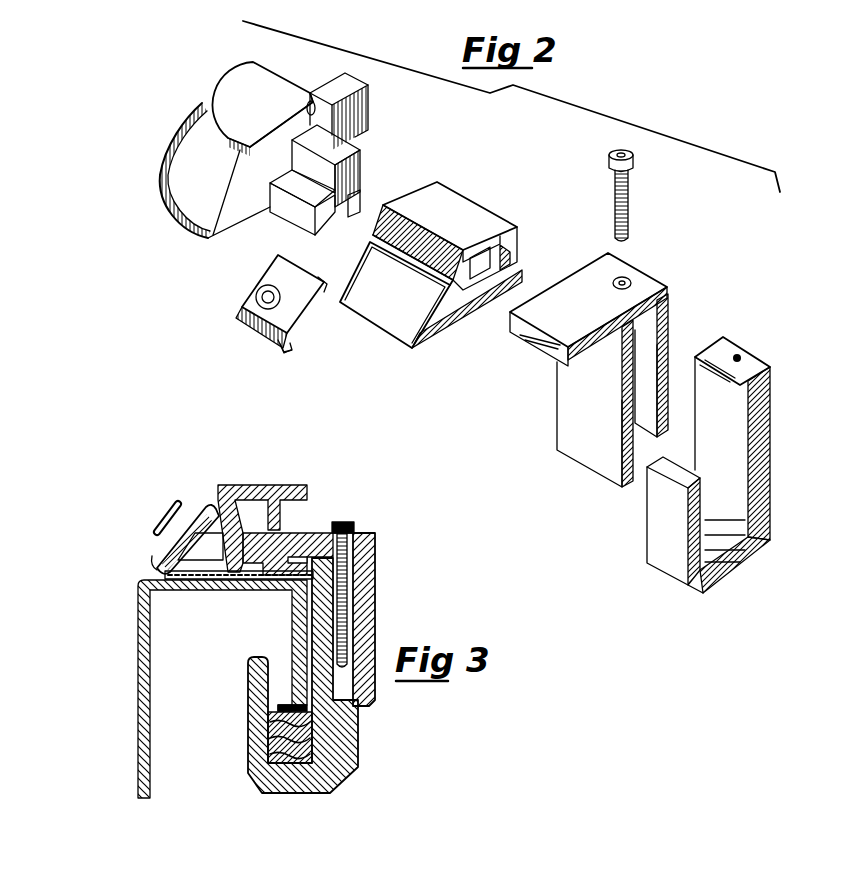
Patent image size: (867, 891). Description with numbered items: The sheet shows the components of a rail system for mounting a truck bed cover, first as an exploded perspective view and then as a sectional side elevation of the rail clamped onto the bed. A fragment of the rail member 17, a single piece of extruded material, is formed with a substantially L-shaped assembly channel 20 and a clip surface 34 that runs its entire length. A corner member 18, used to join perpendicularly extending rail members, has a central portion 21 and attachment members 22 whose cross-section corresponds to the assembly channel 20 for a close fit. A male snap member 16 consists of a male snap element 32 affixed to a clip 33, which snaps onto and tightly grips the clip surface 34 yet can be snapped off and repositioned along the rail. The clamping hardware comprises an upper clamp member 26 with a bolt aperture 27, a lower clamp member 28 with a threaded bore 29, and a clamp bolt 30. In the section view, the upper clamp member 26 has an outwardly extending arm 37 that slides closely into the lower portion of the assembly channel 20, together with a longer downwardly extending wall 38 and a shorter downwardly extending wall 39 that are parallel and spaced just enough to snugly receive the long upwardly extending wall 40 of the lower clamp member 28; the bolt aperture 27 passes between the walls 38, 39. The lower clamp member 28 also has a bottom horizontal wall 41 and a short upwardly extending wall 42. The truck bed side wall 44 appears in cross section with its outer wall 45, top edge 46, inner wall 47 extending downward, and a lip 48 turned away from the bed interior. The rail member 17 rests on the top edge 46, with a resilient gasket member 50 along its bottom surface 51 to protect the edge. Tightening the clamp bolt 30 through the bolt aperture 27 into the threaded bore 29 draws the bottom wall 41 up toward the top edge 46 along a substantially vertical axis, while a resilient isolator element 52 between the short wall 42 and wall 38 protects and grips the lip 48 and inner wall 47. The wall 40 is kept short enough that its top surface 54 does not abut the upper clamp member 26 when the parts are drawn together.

In FIG. 2, the male snap member 16 is at (242, 341).
In FIG. 2, the rail member 17 is at (380, 313).
In FIG. 2, the corner member 18 is at (220, 101).
In FIG. 2, the assembly channel 20 is at (519, 252).
In FIG. 2, the central portion 21 is at (247, 80).
In FIG. 2, the attachment members 22 is at (370, 98).
In FIG. 2, the upper clamp member 26 is at (600, 460).
In FIG. 3, the upper clamp member 26 is at (375, 602).
In FIG. 2, the bolt aperture 27 is at (630, 280).
In FIG. 3, the bolt aperture 27 is at (360, 536).
In FIG. 2, the lower clamp member 28 is at (738, 570).
In FIG. 3, the lower clamp member 28 is at (297, 800).
In FIG. 2, the threaded bore 29 is at (744, 357).
In FIG. 2, the clamp bolt 30 is at (614, 195).
In FIG. 3, the clamp bolt 30 is at (343, 594).
In FIG. 2, the male snap element 32 is at (252, 298).
In FIG. 2, the clip 33 is at (291, 348).
In FIG. 2, the clip surface 34 is at (393, 303).
In FIG. 3, the outwardly extending arm 37 is at (290, 542).
In FIG. 3, the longer downwardly extending wall 38 is at (357, 767).
In FIG. 3, the shorter downwardly extending wall 39 is at (371, 708).
In FIG. 3, the long upwardly extending wall 40 is at (348, 730).
In FIG. 3, the bottom horizontal wall 41 is at (282, 784).
In FIG. 3, the short upwardly extending wall 42 is at (258, 713).
In FIG. 3, the side wall 44 is at (130, 677).
In FIG. 3, the outer wall 45 is at (137, 637).
In FIG. 3, the top edge 46 is at (207, 590).
In FIG. 3, the inner wall 47 is at (296, 615).
In FIG. 3, the lip 48 is at (285, 703).
In FIG. 3, the gasket member 50 is at (165, 578).
In FIG. 3, the bottom surface 51 is at (231, 583).
In FIG. 3, the isolator element 52 is at (268, 752).
In FIG. 2, the top surface 54 is at (724, 340).
In FIG. 3, the top surface 54 is at (355, 564).